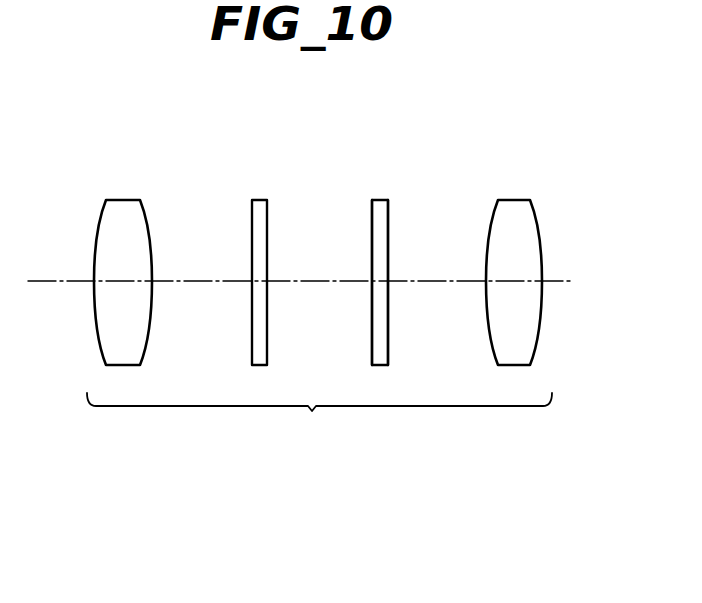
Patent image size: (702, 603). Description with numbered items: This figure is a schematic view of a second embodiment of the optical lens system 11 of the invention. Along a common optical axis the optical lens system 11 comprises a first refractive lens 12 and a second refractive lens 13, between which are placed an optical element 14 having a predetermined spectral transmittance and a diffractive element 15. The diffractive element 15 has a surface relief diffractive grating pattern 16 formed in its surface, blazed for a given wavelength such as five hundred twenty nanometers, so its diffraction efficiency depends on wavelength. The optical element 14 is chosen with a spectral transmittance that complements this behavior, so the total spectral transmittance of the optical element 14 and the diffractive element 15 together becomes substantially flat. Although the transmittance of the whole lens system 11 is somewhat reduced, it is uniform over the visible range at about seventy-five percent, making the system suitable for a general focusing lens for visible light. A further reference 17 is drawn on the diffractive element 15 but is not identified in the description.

The optical lens system 11 is at (319, 421).
The first refractive lens 12 is at (123, 200).
The second refractive lens 13 is at (518, 200).
The optical element 14 is at (261, 200).
The diffractive element 15 is at (383, 197).
The surface relief diffractive grating pattern 16 is at (388, 230).
The plate surface 17 is at (372, 238).